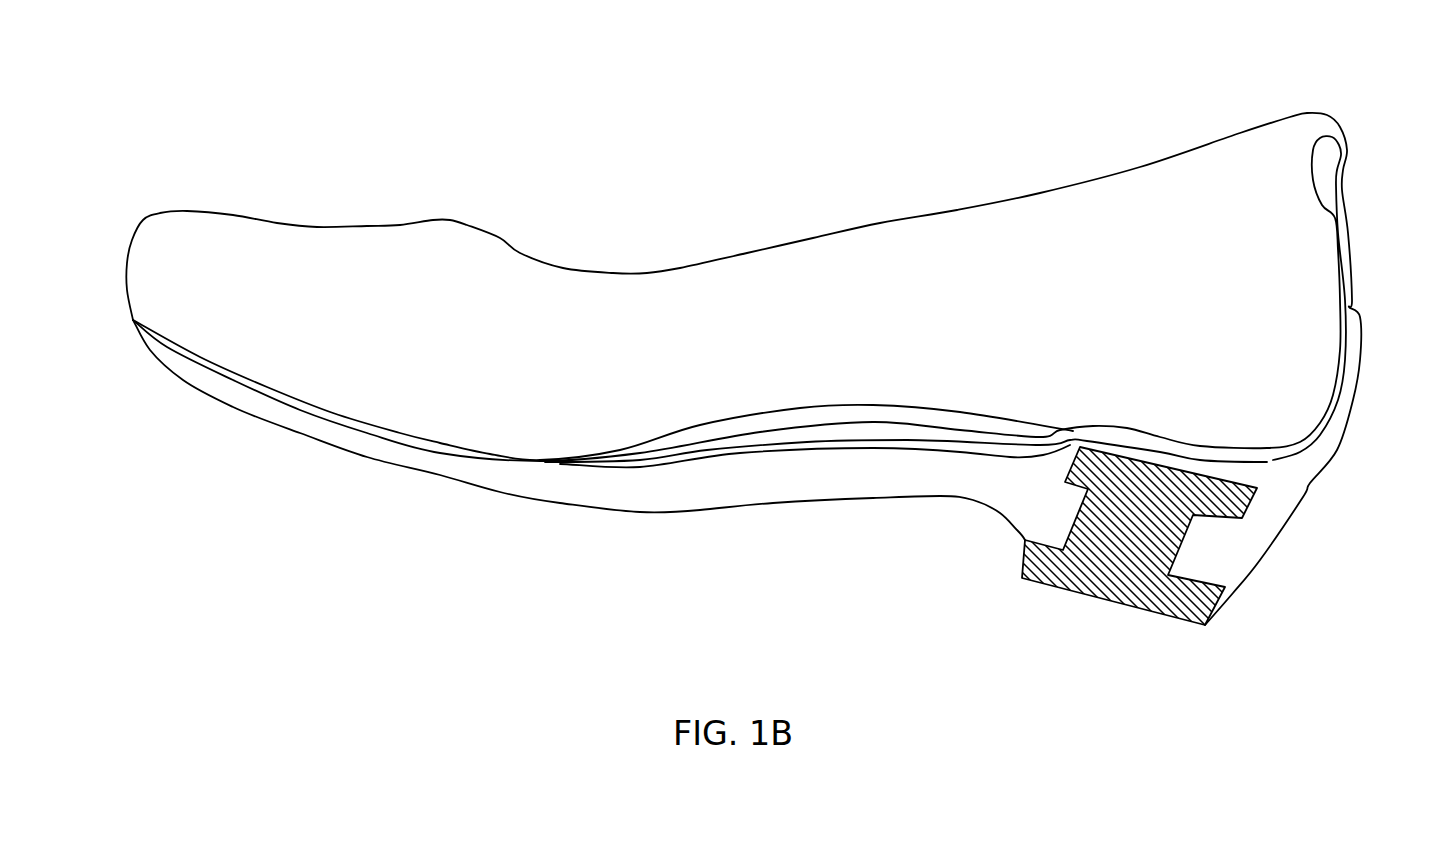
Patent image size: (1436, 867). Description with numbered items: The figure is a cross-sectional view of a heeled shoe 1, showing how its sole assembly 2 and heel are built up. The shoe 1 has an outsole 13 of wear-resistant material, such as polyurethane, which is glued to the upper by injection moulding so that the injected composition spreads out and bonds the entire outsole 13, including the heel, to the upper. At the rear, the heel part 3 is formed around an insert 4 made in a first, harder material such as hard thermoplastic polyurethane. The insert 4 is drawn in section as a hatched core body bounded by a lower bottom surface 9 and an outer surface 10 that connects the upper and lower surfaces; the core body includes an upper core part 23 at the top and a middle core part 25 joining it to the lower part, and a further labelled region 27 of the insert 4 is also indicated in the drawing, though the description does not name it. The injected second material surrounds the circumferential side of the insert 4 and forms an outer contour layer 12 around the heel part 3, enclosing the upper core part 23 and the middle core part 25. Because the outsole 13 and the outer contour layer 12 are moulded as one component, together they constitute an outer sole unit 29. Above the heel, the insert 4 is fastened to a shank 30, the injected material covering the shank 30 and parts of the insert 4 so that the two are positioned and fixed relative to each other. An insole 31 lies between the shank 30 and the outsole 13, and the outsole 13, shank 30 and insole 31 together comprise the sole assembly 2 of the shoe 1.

The shoe 1 is at (718, 84).
The sole assembly 2 is at (800, 417).
The heel part 3 is at (1227, 573).
The insert 4 is at (1140, 563).
The lower bottom surface 9 is at (1028, 580).
The outer surface 10 is at (1227, 575).
The outer contour layer 12 is at (1038, 532).
The outsole 13 is at (767, 480).
The upper core part 23 is at (1238, 500).
The middle core part 25 is at (1163, 528).
The heel base 27 is at (1093, 548).
The outer sole unit 29 is at (908, 482).
The shank 30 is at (702, 438).
The insole 31 is at (853, 445).